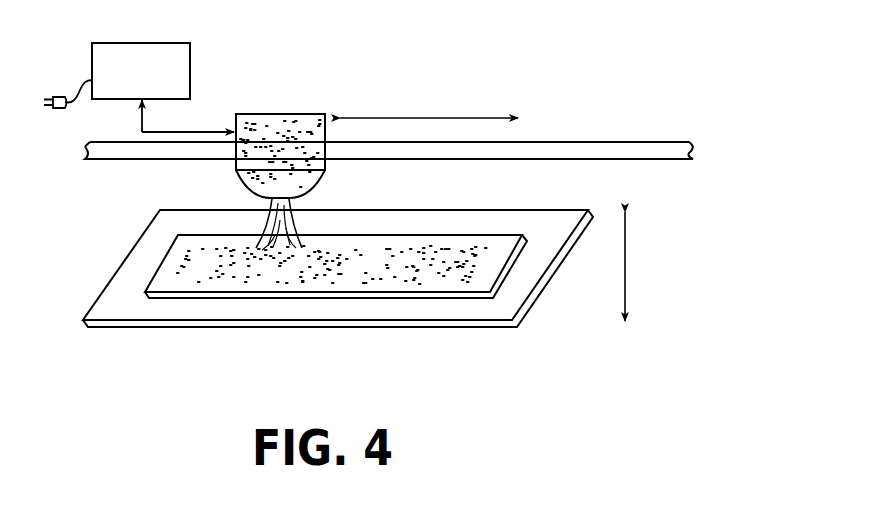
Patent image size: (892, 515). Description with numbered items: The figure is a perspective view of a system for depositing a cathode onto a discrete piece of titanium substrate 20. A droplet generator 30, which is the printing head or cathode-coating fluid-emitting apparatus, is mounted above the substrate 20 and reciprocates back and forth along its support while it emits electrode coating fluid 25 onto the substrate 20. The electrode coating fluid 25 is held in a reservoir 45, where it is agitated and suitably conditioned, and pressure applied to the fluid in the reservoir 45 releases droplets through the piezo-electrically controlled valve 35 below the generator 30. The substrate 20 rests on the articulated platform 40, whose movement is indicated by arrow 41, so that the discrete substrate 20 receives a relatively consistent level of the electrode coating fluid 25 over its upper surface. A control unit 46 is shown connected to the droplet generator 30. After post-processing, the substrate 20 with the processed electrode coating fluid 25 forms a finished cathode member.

The CPU controller 46 is at (156, 43).
The reservoir 45 is at (277, 114).
The droplet generator 30 is at (296, 111).
The piezo-electrically controlled valve 35 is at (265, 208).
The electrode coating fluid 25 is at (298, 218).
The discrete substrate 20 is at (284, 298).
The articulated platform 40 is at (575, 138).
The arrow 41 is at (626, 283).